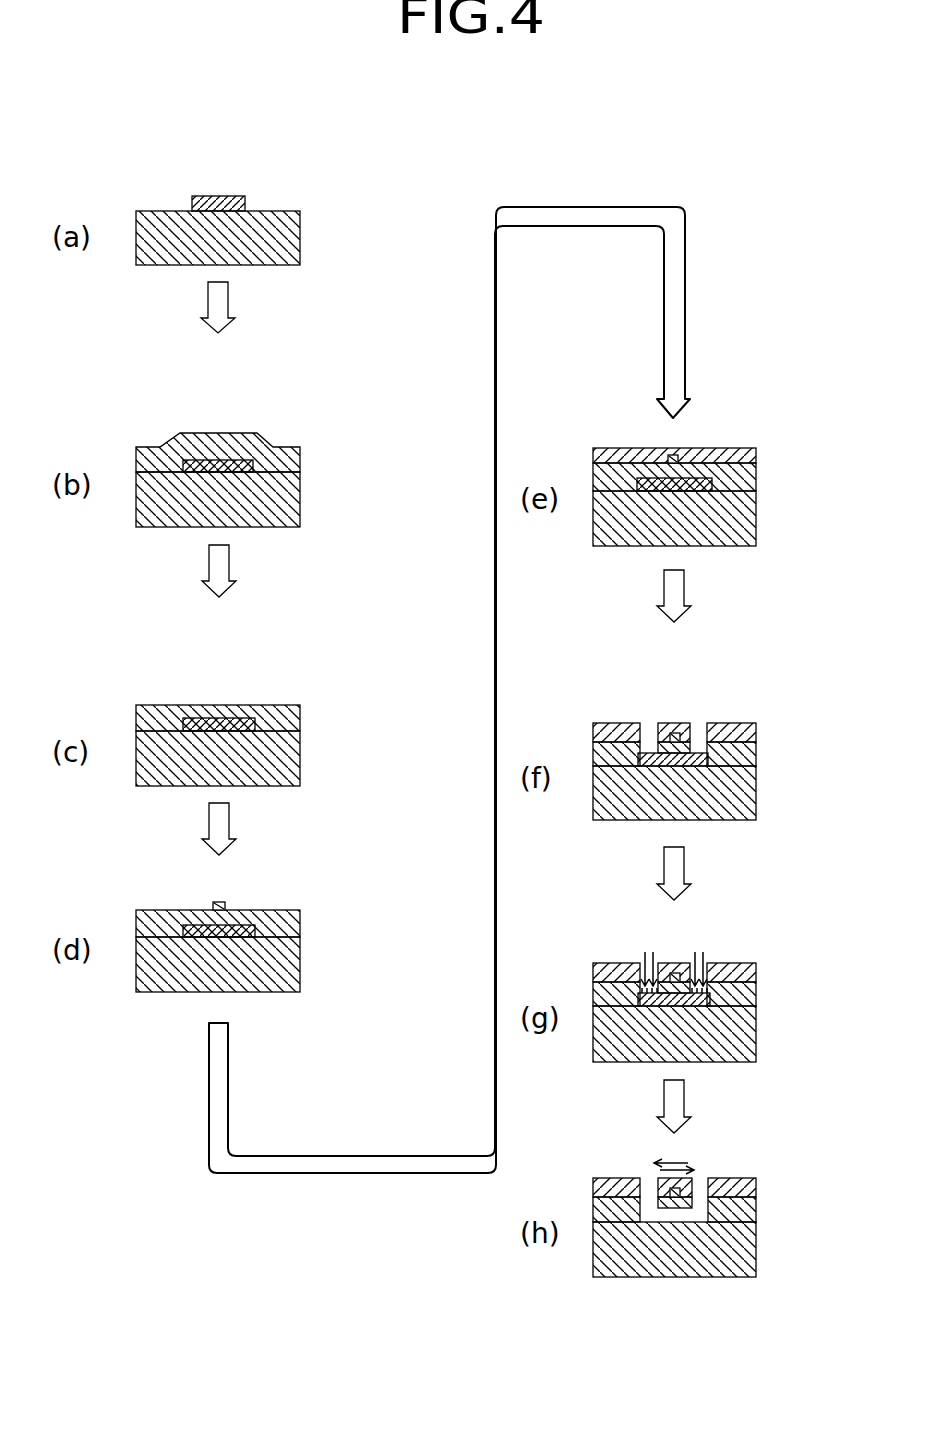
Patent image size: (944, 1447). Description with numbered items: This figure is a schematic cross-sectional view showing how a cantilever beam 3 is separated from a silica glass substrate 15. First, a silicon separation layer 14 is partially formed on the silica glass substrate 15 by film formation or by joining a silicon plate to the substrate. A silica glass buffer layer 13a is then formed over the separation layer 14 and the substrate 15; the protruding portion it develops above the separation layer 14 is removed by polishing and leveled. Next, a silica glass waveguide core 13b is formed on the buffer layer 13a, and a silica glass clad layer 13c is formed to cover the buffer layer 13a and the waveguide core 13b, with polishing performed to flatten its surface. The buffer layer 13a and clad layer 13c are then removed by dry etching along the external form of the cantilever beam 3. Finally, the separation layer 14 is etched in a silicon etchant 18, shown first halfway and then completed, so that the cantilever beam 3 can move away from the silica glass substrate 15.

The silicon separation layer 14 is at (245, 203).
The silica glass substrate 15 is at (300, 244).
The silica glass buffer layer 13a is at (260, 440).
The silica glass waveguide core 13b is at (225, 904).
The silica glass clad layer 13c is at (756, 455).
The cantilever beam 3 is at (685, 723).
The silicon etchant 18 is at (652, 953).